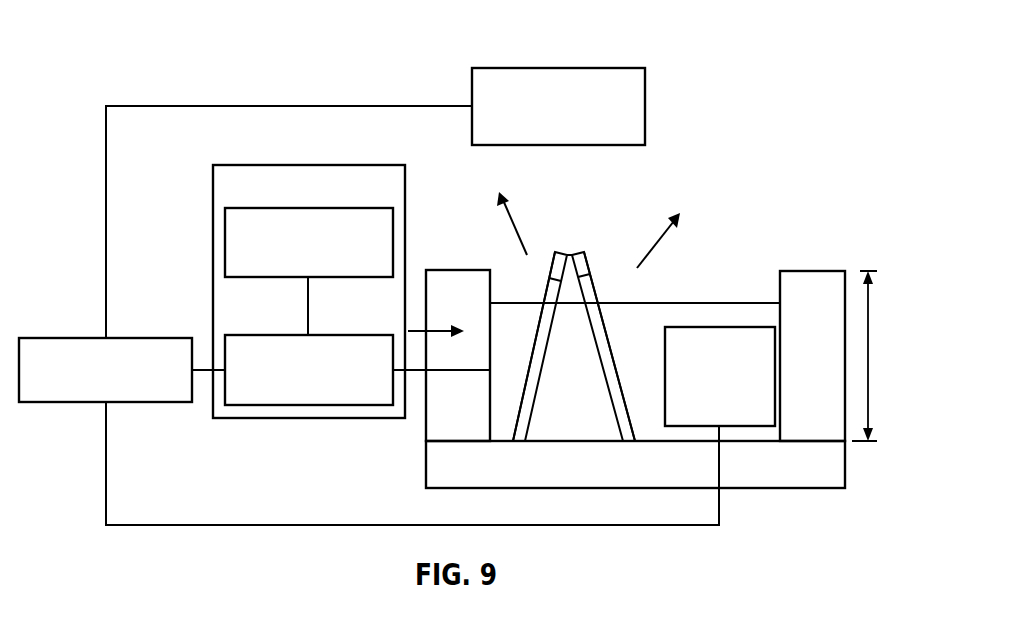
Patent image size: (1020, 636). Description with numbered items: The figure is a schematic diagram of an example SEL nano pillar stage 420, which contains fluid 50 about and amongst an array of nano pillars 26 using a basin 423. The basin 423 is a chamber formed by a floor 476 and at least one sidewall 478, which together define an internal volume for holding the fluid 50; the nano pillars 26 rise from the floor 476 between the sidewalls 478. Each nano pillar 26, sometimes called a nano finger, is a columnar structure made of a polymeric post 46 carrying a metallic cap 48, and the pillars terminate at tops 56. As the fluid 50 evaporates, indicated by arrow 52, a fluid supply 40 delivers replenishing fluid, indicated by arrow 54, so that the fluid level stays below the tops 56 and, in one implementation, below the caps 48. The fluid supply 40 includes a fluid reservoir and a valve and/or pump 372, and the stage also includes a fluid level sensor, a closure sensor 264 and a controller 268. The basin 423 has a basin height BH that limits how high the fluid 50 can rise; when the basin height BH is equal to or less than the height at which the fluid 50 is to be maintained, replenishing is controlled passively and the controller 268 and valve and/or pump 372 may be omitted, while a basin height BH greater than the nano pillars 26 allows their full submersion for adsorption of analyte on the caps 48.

The SEL nano pillar stage 420 is at (156, 58).
The closure sensor 264 is at (647, 107).
The fluid supply 40 is at (350, 165).
The valve and/or pump 372 is at (308, 407).
The controller 268 is at (90, 338).
The sidewall 478 is at (455, 270).
The arrow indicating replenishing fluid 54 is at (415, 330).
The floor 476 is at (768, 441).
The basin 423 is at (770, 276).
The fluid 50 is at (695, 303).
The basin height BH is at (868, 355).
The nano pillars 26 is at (620, 340).
The polymeric post 46 is at (541, 370).
The metallic cap 48 is at (556, 256).
The tops of nano pillars 56 is at (577, 250).
The arrow indicating evaporation 52 is at (516, 232).